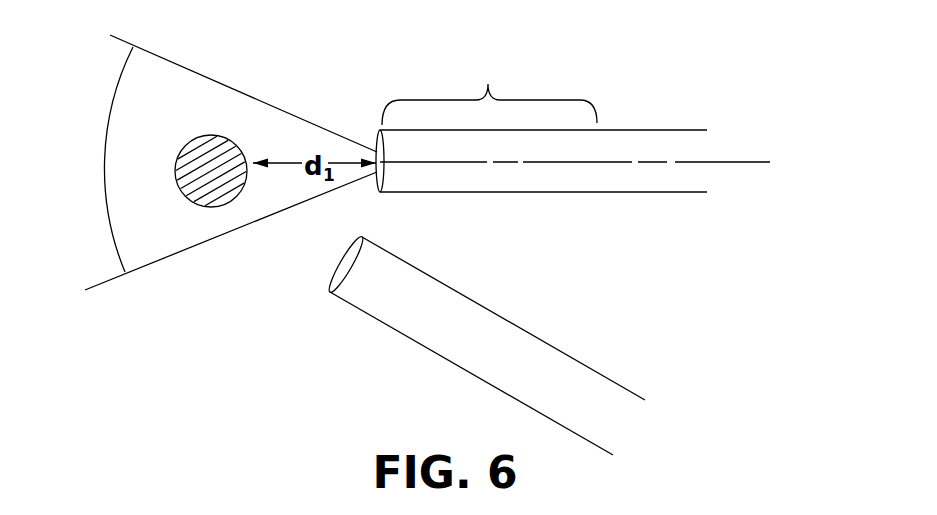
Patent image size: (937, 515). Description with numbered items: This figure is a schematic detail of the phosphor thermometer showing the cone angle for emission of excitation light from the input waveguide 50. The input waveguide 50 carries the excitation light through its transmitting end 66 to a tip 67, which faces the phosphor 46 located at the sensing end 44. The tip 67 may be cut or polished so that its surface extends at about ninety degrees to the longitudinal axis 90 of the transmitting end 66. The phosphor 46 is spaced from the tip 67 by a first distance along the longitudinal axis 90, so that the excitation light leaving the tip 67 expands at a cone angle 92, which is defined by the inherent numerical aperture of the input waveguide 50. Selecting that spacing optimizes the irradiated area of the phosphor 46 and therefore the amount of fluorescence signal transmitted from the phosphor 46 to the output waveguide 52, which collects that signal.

The sensing end 44 is at (205, 206).
The phosphor 46 is at (217, 200).
The input waveguide 50 is at (592, 183).
The output waveguide 52 is at (467, 357).
The transmitting end 66 is at (489, 87).
The tip 67 is at (375, 174).
The longitudinal axis 90 is at (718, 165).
The cone angle 92 is at (102, 170).